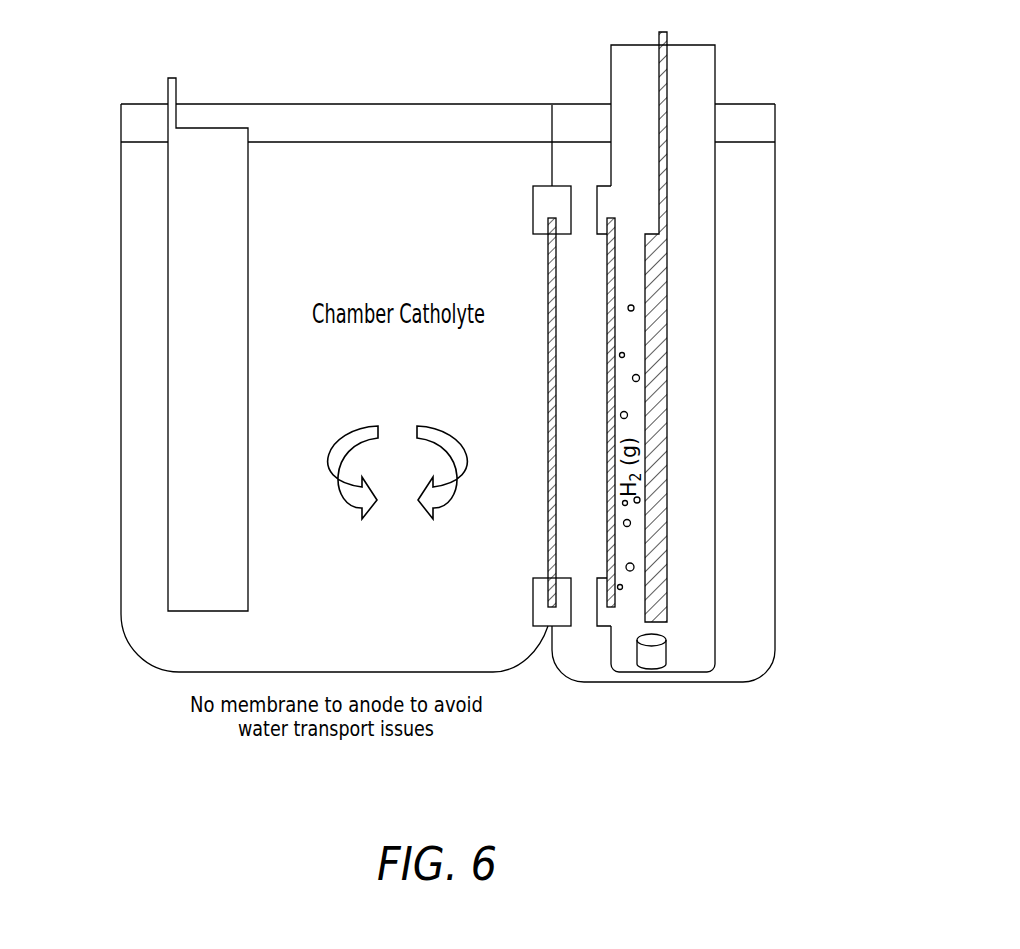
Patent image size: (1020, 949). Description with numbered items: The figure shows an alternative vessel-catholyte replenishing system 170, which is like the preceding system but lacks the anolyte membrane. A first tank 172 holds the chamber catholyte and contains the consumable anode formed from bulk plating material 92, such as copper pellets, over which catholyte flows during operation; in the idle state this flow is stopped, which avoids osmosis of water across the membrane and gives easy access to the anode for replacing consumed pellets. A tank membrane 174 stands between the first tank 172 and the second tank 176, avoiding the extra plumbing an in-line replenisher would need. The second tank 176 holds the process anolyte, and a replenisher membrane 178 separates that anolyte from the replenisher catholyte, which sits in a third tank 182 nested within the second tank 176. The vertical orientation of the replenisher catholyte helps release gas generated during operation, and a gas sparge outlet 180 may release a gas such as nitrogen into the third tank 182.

The system 170 is at (120, 173).
The bulk plating material 92 is at (188, 213).
The tank 172 is at (130, 417).
The tank membrane 174 is at (549, 262).
The second tank 176 is at (775, 410).
The replenisher membrane 178 is at (607, 538).
The gas sparge outlet 180 is at (660, 655).
The third tank 182 is at (715, 570).